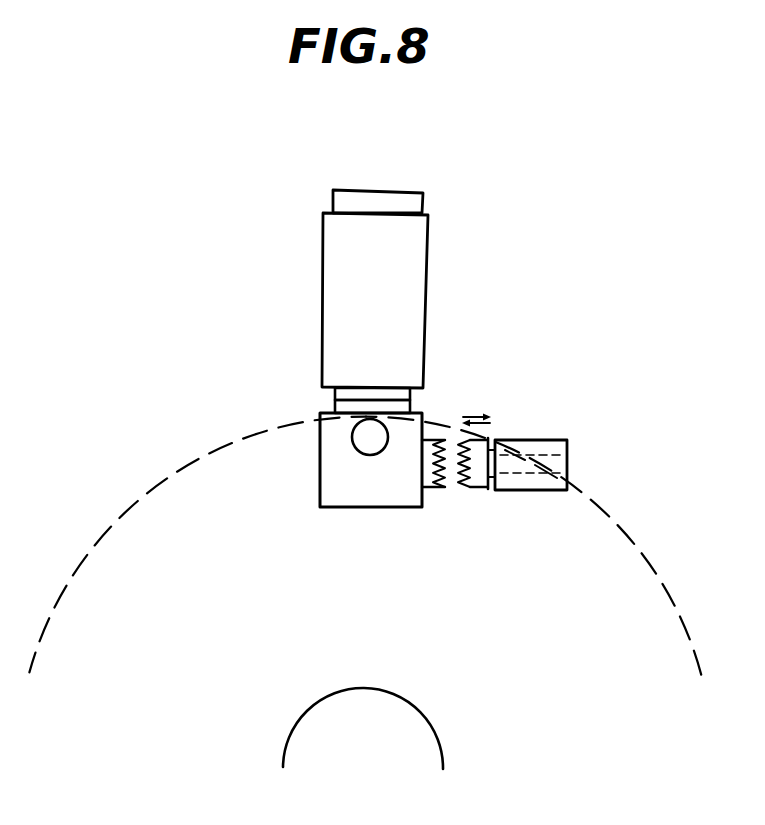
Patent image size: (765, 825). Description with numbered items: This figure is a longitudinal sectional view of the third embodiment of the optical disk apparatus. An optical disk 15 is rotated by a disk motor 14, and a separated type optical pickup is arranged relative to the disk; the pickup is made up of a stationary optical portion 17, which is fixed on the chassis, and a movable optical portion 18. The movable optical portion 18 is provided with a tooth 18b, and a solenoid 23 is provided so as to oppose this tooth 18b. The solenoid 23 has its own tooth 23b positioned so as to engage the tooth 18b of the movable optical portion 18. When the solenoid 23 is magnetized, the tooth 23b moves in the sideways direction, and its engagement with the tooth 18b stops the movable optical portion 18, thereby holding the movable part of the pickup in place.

The disk motor 14 is at (438, 737).
The optical disk 15 is at (617, 527).
The stationary optical portion 17 is at (418, 287).
The movable optical portion 18 is at (338, 508).
The tooth 18b is at (435, 490).
The solenoid 23 is at (547, 440).
The tooth 23b is at (490, 490).